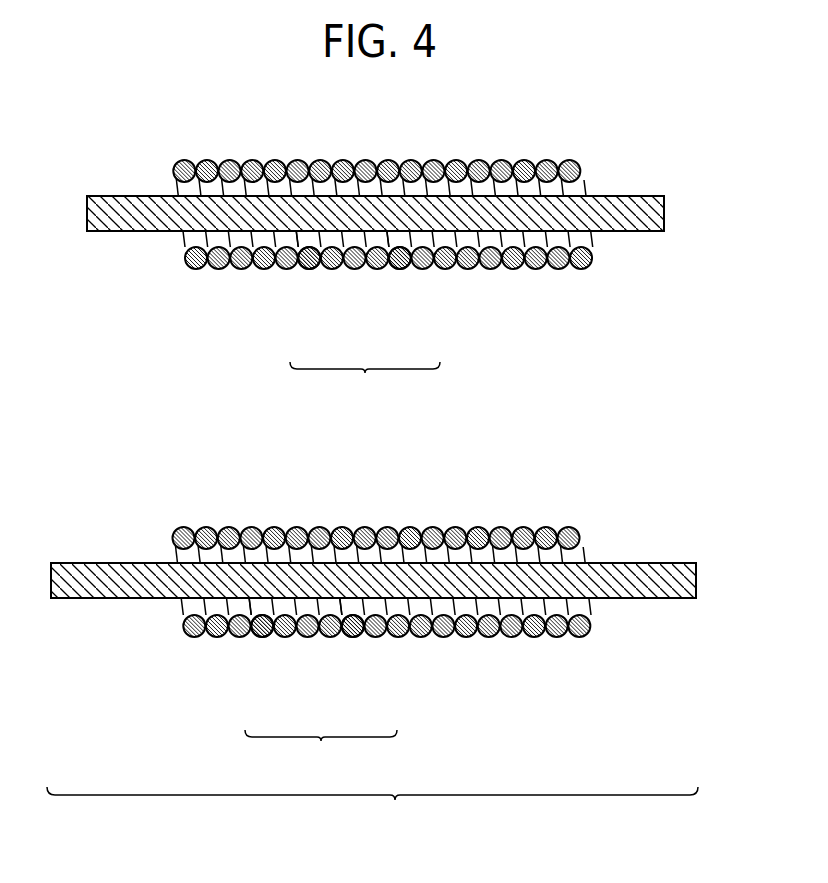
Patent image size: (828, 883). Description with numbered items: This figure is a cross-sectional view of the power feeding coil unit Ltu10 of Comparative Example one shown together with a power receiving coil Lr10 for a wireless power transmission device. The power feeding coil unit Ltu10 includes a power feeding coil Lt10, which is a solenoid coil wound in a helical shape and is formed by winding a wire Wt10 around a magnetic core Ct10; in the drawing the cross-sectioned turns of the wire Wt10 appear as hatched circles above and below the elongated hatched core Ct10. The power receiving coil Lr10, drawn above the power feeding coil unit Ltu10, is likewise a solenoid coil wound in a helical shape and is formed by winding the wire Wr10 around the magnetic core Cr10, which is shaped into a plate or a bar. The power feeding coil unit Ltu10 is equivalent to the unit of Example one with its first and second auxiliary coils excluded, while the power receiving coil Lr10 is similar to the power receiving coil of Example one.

The magnetic core Cr10 is at (308, 269).
The wire Wr10 is at (399, 268).
The power receiving coil Lr10 is at (365, 384).
The magnetic core Ct10 is at (262, 637).
The wire Wt10 is at (355, 637).
The power feeding coil Lt10 is at (321, 751).
The power feeding coil unit Ltu10 is at (372, 810).